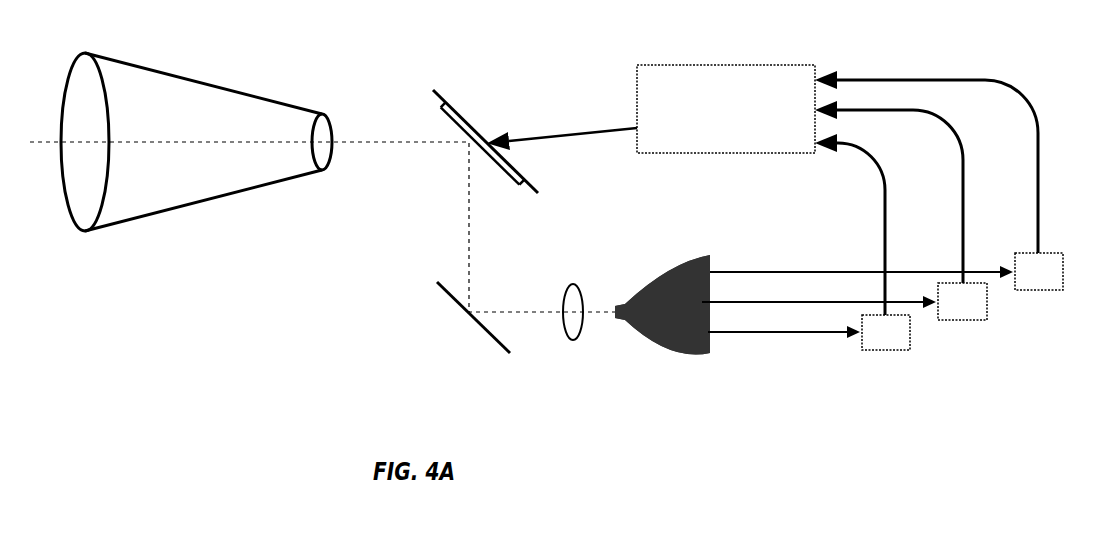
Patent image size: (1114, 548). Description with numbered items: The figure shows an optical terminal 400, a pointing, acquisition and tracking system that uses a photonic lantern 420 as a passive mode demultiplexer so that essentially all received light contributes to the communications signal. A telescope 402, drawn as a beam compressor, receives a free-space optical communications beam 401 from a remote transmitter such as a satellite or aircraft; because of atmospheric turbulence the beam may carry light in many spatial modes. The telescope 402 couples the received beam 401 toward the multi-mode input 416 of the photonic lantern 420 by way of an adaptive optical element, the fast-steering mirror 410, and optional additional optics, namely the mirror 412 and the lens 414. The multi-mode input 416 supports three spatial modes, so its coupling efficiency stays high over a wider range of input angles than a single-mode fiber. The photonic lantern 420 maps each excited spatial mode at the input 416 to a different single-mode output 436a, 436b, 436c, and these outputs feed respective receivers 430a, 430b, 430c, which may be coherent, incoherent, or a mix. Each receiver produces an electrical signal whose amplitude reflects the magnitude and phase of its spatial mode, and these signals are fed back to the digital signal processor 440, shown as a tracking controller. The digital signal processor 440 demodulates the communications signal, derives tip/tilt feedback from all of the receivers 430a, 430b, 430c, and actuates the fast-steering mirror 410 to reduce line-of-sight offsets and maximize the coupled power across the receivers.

The optical terminal 400 is at (276, 369).
The free-space optical communications beam 401 is at (323, 227).
The telescope 402 is at (202, 180).
The fast-steering mirror 410 is at (512, 102).
The mirror 412 is at (441, 330).
The lens 414 is at (575, 344).
The multi-mode input 416 is at (649, 305).
The photonic lantern 420 is at (639, 289).
The receiver 430a is at (882, 265).
The receiver 430b is at (919, 231).
The receiver 430c is at (958, 201).
The single-mode output 436a is at (777, 318).
The single-mode output 436b is at (812, 290).
The single-mode output 436c is at (855, 258).
The digital signal processor 440 is at (662, 124).